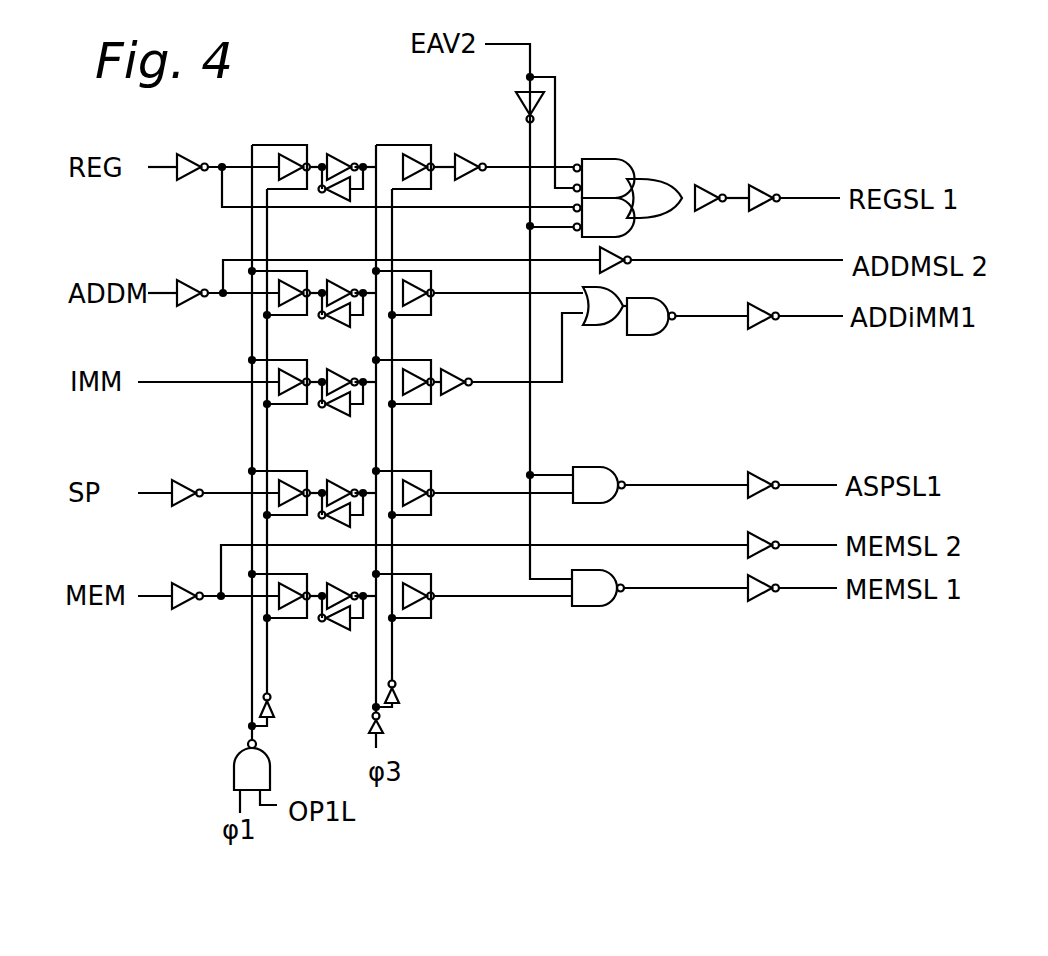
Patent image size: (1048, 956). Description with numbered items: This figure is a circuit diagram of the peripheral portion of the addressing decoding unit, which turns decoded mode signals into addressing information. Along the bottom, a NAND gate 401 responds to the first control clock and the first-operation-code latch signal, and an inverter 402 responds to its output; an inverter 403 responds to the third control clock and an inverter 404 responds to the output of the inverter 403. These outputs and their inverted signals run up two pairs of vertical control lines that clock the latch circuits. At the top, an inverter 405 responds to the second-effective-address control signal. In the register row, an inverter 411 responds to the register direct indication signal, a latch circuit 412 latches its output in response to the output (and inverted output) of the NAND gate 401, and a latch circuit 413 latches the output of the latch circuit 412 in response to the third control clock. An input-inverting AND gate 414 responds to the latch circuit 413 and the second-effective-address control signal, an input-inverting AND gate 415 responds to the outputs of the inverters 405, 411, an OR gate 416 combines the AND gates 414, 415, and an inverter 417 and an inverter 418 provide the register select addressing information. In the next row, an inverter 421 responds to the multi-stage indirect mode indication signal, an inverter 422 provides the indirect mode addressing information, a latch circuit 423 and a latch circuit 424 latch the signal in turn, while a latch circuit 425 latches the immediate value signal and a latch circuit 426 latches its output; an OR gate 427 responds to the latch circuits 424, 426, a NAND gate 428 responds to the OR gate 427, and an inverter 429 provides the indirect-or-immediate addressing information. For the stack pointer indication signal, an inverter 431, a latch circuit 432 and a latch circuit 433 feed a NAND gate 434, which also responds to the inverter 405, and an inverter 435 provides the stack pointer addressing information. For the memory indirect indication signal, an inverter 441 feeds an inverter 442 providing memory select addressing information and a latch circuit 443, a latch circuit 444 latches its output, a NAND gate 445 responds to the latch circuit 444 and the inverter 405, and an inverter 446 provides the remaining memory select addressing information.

The NAND gate 401 is at (238, 766).
The inverter 402 is at (273, 712).
The inverter 403 is at (380, 725).
The inverter 404 is at (397, 695).
The inverter 405 is at (547, 104).
The inverter 411 is at (190, 153).
The latch circuit 412 is at (327, 138).
The latch circuit 413 is at (450, 140).
The AND gate 414 is at (610, 159).
The AND gate 415 is at (620, 196).
The OR gate 416 is at (664, 188).
The inverter 417 is at (700, 208).
The inverter 418 is at (763, 208).
The inverter 421 is at (188, 279).
The inverter 422 is at (604, 250).
The latch circuit 423 is at (342, 273).
The latch circuit 424 is at (440, 285).
The latch circuit 425 is at (338, 373).
The latch circuit 426 is at (455, 371).
The OR gate 427 is at (600, 320).
The NAND gate 428 is at (652, 335).
The inverter 429 is at (763, 329).
The inverter 431 is at (183, 480).
The latch circuit 432 is at (335, 475).
The latch circuit 433 is at (447, 480).
The NAND gate 434 is at (597, 480).
The inverter 435 is at (758, 476).
The inverter 441 is at (183, 583).
The inverter 442 is at (748, 536).
The latch circuit 443 is at (323, 628).
The latch circuit 444 is at (420, 623).
The NAND gate 445 is at (594, 600).
The inverter 446 is at (755, 600).